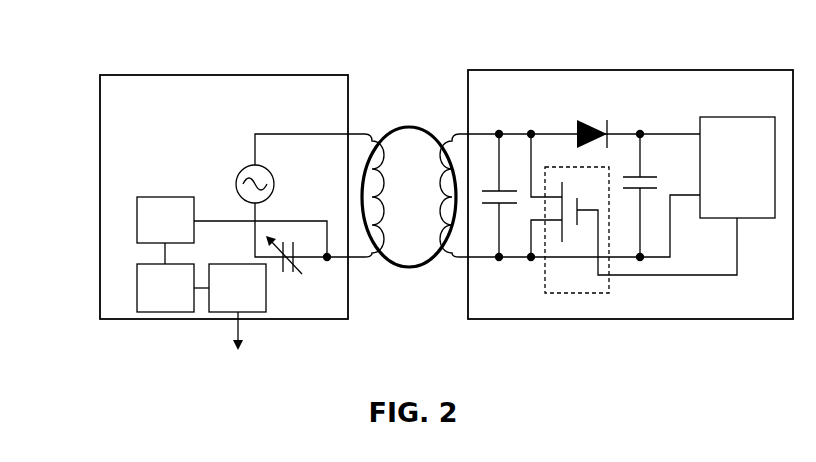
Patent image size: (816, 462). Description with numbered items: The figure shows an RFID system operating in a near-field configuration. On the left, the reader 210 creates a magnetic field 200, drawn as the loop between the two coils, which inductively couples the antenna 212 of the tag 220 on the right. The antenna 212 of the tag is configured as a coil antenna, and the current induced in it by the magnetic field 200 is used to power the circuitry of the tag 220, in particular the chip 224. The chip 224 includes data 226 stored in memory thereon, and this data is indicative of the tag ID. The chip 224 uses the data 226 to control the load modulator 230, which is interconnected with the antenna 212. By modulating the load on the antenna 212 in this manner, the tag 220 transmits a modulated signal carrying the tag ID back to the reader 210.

The magnetic field 200 is at (410, 119).
The reader 210 is at (242, 212).
The antenna 212 is at (457, 133).
The tag 220 is at (630, 194).
The chip 224 is at (737, 167).
The data 226 is at (737, 199).
The load modulator 230 is at (596, 295).